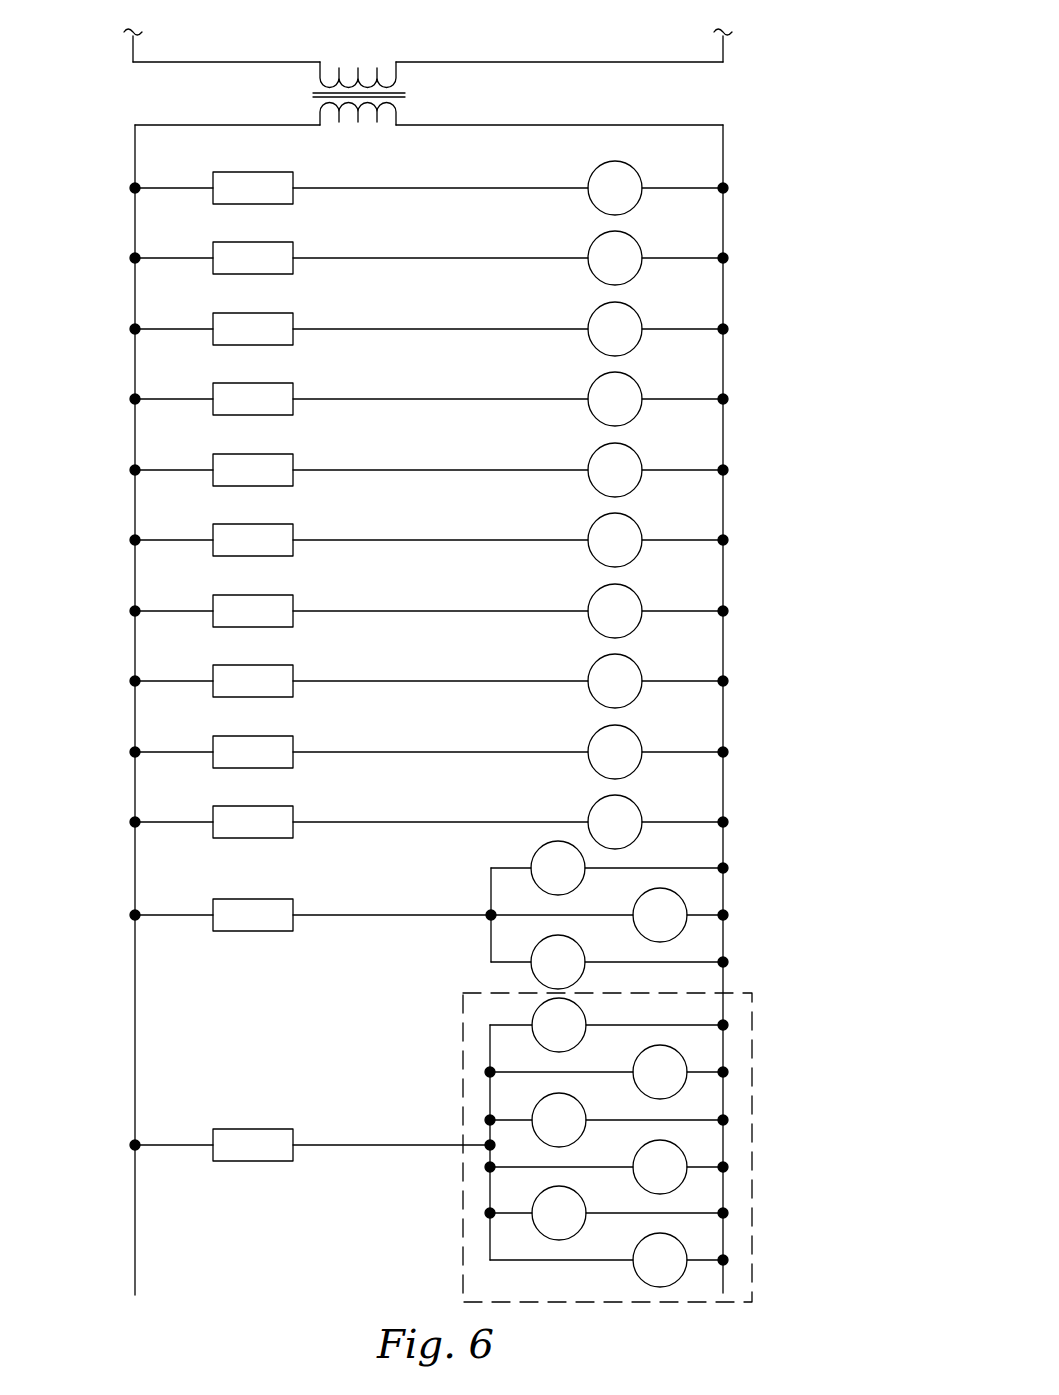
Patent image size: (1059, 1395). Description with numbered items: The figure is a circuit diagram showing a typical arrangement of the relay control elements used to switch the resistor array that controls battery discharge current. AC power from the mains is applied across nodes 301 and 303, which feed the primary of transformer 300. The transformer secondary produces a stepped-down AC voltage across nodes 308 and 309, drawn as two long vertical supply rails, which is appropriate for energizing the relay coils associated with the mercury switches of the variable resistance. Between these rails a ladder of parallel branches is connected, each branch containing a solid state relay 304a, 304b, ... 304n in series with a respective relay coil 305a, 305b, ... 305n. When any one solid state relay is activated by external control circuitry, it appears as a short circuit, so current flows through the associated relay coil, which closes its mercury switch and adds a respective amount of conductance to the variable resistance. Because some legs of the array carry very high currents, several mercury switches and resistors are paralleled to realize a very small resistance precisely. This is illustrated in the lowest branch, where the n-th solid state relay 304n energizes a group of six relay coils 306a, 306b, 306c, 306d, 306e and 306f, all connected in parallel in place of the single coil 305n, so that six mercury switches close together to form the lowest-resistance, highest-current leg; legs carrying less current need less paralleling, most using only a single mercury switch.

The transformer 300 is at (359, 71).
The node 301 is at (135, 31).
The node 303 is at (725, 31).
The solid state relay 304a is at (268, 183).
The solid state relay 304b is at (268, 253).
The solid state relay 304n is at (245, 1140).
The relay coil 305a is at (603, 185).
The relay coil 305b is at (607, 253).
The relay coil 305n is at (565, 1145).
The relay coil 306a is at (655, 1262).
The relay coil 306b is at (557, 1218).
The relay coil 306c is at (655, 1167).
The relay coil 306d is at (555, 1125).
The relay coil 306e is at (656, 1071).
The relay coil 306f is at (568, 1030).
The node 308 is at (135, 125).
The node 309 is at (723, 125).